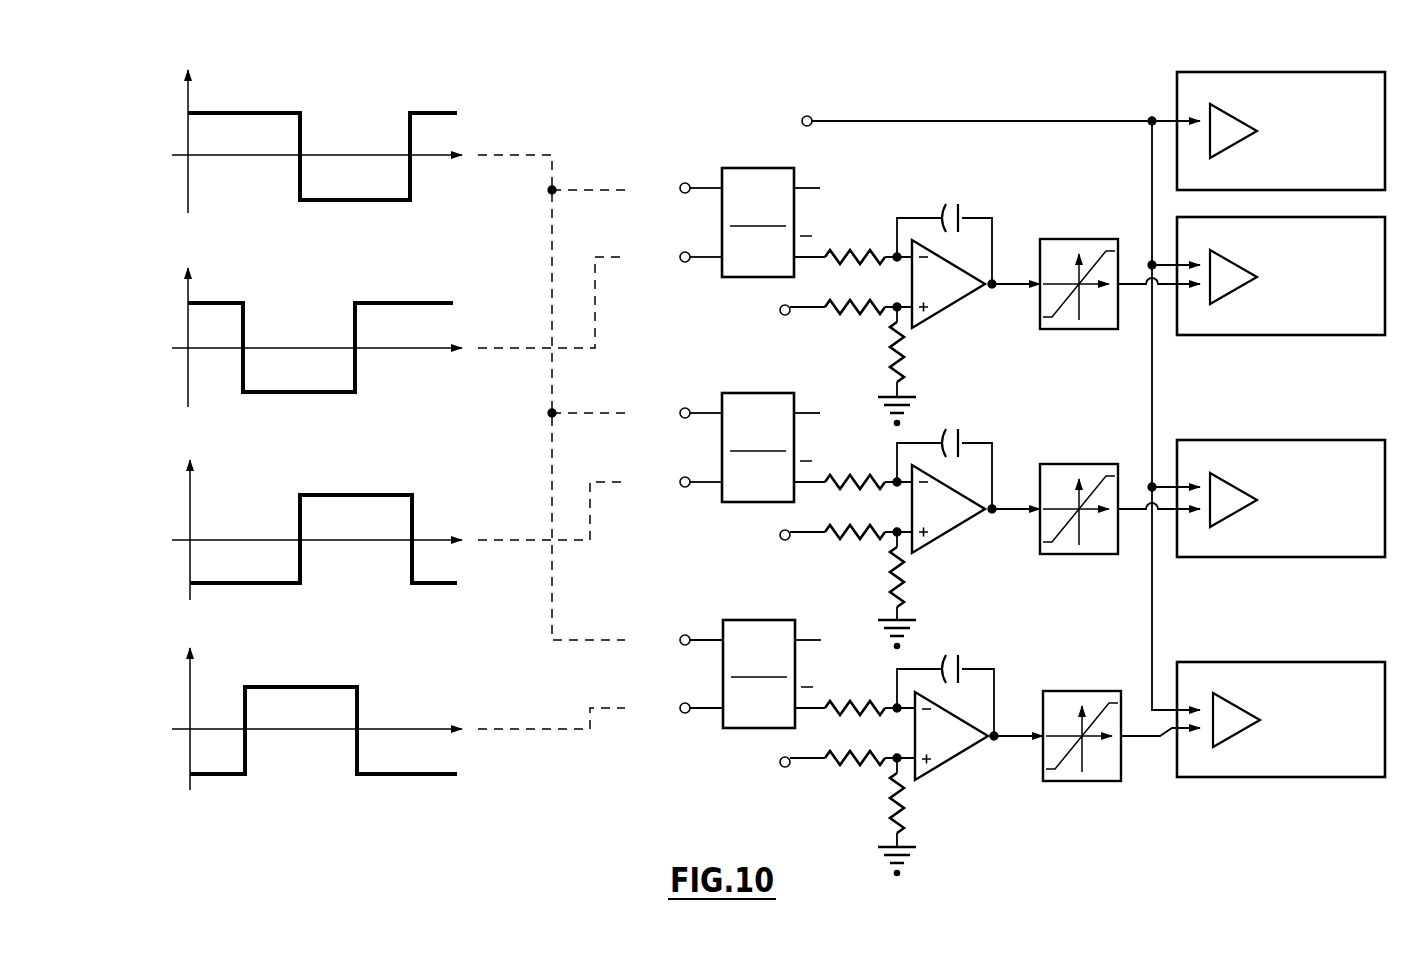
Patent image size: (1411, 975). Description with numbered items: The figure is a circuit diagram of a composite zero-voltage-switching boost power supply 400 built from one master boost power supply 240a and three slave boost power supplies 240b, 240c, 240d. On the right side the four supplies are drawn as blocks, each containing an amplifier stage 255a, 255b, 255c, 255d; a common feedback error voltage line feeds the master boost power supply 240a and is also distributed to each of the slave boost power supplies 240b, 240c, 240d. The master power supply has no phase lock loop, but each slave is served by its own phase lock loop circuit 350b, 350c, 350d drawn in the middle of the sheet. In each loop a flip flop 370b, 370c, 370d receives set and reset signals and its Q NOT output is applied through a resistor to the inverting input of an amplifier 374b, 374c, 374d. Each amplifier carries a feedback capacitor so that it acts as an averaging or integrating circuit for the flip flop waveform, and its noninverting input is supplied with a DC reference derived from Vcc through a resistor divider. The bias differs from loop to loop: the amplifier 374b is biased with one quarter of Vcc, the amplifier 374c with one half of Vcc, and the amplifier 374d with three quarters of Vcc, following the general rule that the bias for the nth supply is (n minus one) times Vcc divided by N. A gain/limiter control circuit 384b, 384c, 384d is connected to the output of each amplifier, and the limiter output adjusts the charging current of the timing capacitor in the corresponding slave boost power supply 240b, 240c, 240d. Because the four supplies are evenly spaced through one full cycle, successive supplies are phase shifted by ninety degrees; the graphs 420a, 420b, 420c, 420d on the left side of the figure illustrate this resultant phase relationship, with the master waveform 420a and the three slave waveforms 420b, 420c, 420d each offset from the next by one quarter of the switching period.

The composite ZVS power supply 400 is at (597, 832).
The graph 420a is at (426, 98).
The graph 420b is at (413, 296).
The graph 420c is at (428, 486).
The graph 420d is at (374, 675).
The flip flop 370b is at (732, 277).
The flip flop 370c is at (732, 502).
The flip flop 370d is at (733, 728).
The phase lock loop circuit 350b is at (887, 290).
The phase lock loop circuit 350c is at (887, 521).
The phase lock loop circuit 350d is at (889, 748).
The amplifier 374b is at (936, 312).
The amplifier 374c is at (936, 537).
The amplifier 374d is at (938, 764).
The gain/limiter control circuit 384b is at (1058, 331).
The gain/limiter control circuit 384c is at (1068, 556).
The gain/limiter control circuit 384d is at (1073, 783).
The master boost power supply 240a is at (1271, 111).
The slave boost power supply 240b is at (1281, 297).
The slave boost power supply 240c is at (1281, 480).
The slave boost power supply 240d is at (1275, 700).
The master amplifier 255a is at (1238, 150).
The slave amplifier 255b is at (1240, 296).
The slave amplifier 255c is at (1240, 519).
The slave amplifier 255d is at (1242, 739).